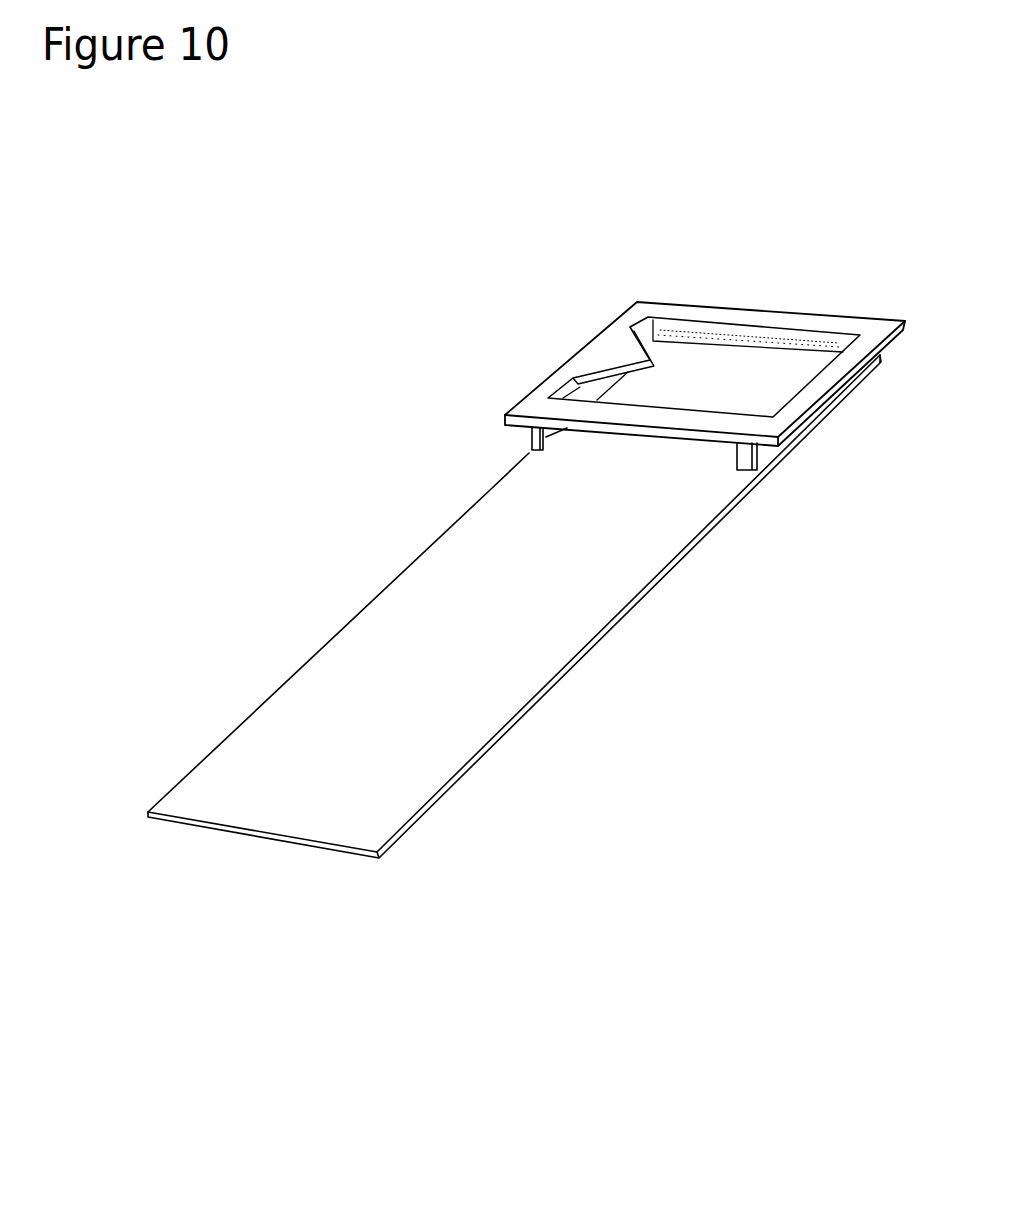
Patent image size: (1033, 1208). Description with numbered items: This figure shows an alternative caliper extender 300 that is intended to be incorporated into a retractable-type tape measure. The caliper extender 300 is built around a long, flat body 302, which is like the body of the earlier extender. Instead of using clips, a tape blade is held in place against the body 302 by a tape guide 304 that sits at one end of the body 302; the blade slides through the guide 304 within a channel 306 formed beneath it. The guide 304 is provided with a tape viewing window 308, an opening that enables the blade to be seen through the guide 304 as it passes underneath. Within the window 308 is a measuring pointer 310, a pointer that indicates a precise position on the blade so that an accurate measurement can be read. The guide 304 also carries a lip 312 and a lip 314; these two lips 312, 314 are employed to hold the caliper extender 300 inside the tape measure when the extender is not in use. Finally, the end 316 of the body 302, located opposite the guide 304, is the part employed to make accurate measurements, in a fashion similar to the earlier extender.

The caliper extender 300 is at (591, 198).
The body 302 is at (424, 707).
The tape guide 304 is at (643, 307).
The channel 306 is at (667, 450).
The tape viewing window 308 is at (732, 385).
The measuring pointer 310 is at (627, 348).
The lip 312 is at (527, 402).
The lip 314 is at (765, 438).
The end 316 is at (265, 840).